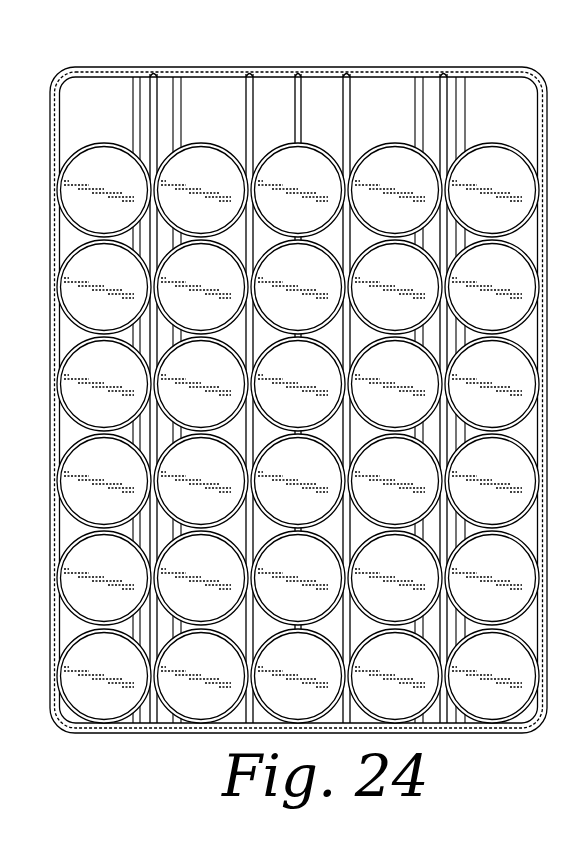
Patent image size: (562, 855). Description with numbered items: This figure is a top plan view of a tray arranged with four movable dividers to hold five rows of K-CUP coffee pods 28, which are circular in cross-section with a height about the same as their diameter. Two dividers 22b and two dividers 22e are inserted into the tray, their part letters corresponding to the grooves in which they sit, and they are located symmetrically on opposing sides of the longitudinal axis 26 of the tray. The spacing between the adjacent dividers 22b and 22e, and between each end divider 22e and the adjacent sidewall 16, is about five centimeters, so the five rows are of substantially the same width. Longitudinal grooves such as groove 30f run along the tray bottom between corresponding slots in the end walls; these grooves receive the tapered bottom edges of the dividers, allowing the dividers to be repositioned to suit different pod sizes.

The sidewall 16 is at (53, 126).
The divider 22b is at (250, 92).
The divider 22e is at (154, 90).
The longitudinal axis 26 is at (298, 0).
The coffee pod 28 is at (75, 390).
The longitudinal groove 30f is at (135, 90).